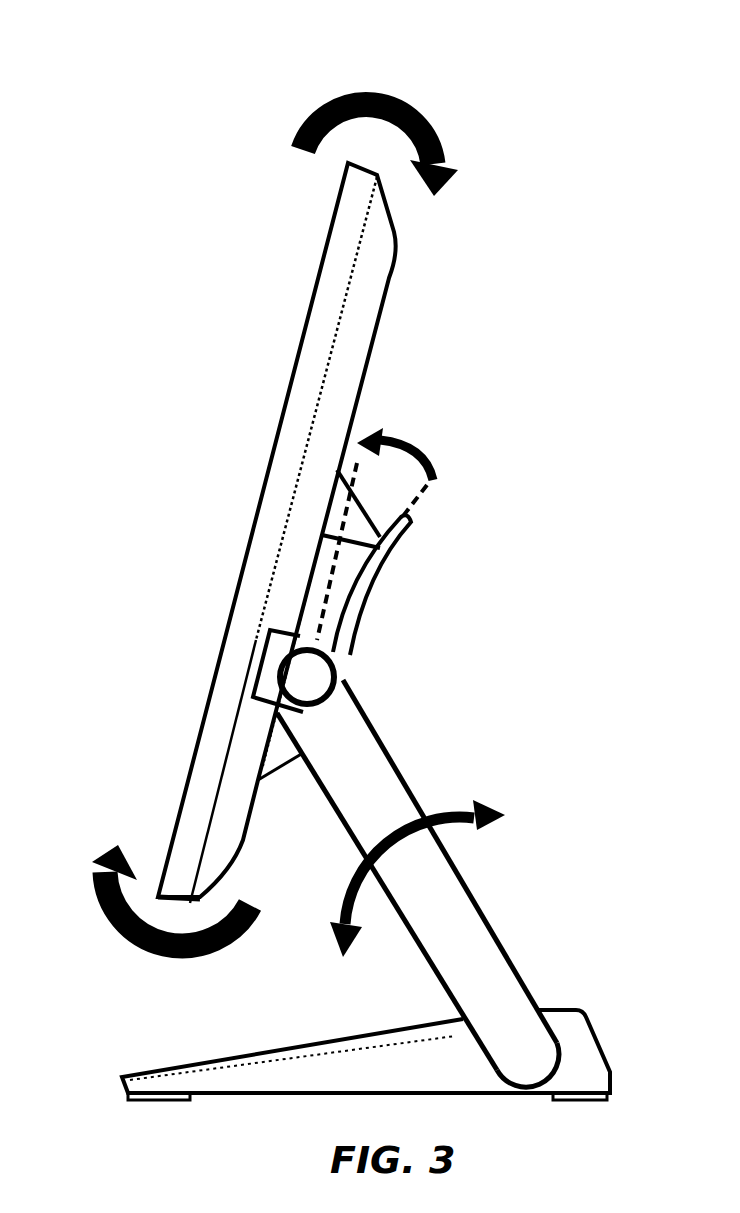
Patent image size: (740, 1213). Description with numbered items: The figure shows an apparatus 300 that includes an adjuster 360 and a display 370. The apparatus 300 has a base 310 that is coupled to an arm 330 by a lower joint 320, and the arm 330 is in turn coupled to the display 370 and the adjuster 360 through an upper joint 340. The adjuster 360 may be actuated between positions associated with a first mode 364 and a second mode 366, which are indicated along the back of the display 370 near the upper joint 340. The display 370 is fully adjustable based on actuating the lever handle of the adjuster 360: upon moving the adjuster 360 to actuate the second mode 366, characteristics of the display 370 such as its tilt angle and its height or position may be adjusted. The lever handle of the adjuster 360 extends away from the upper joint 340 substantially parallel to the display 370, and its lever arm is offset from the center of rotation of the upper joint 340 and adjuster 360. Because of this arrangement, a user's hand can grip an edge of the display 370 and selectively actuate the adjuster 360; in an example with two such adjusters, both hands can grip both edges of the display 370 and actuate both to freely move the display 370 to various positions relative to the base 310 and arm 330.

The apparatus 300 is at (201, 34).
The base 310 is at (153, 1070).
The lower joint 320 is at (523, 1057).
The arm 330 is at (467, 923).
The upper joint 340 is at (320, 677).
The adjuster 360 is at (352, 607).
The first mode 364 is at (417, 503).
The second mode 366 is at (352, 477).
The display 370 is at (330, 290).